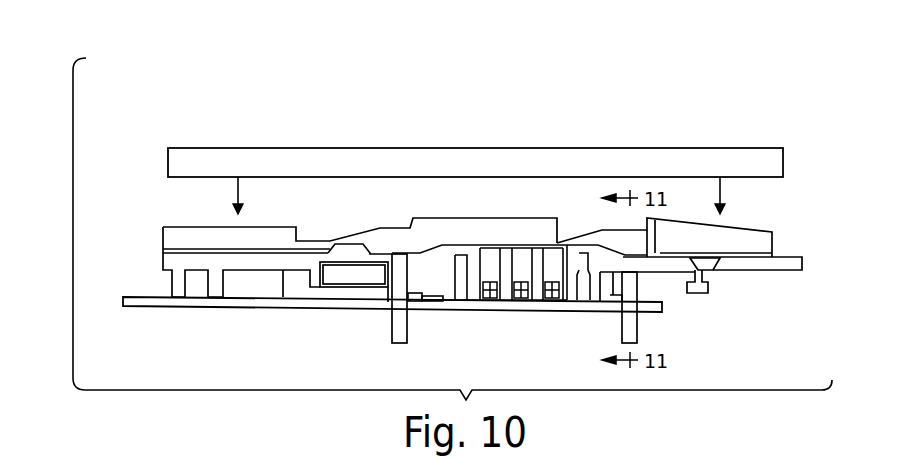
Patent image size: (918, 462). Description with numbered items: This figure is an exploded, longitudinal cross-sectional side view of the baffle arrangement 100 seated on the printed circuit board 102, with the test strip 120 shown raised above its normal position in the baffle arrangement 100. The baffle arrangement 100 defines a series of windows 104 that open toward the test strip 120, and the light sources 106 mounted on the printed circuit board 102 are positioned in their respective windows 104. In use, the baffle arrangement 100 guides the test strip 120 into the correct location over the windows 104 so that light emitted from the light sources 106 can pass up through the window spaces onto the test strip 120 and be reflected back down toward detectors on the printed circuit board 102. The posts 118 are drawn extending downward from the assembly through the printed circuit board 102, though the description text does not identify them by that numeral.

The connector housing 100 is at (156, 233).
The circuit board 102 is at (148, 320).
The contact module 104 is at (485, 255).
The solder tails 106 is at (497, 300).
The standoff posts 118 is at (392, 338).
The cover plate 120 is at (158, 157).